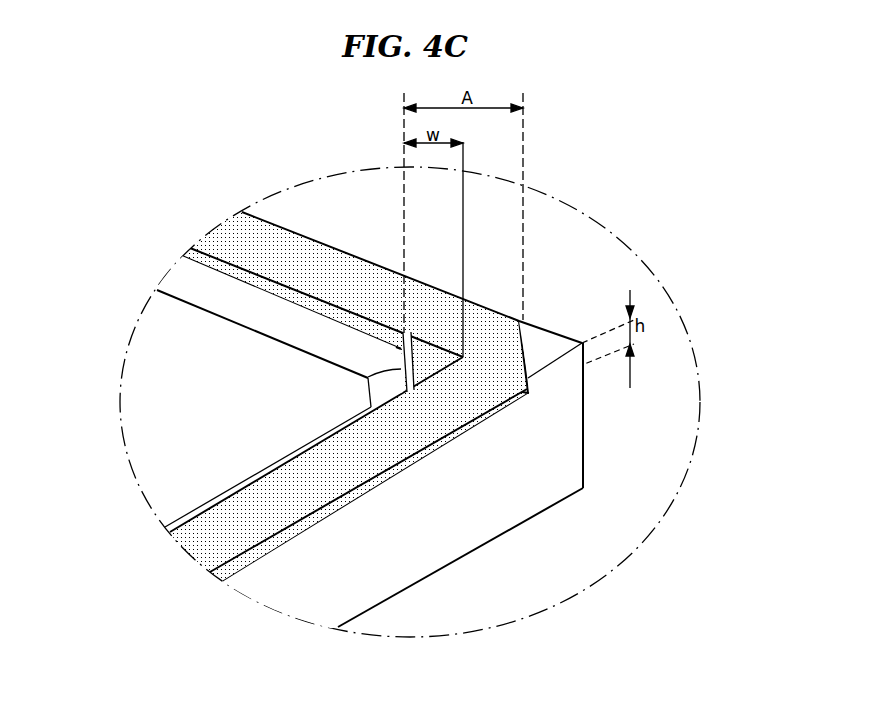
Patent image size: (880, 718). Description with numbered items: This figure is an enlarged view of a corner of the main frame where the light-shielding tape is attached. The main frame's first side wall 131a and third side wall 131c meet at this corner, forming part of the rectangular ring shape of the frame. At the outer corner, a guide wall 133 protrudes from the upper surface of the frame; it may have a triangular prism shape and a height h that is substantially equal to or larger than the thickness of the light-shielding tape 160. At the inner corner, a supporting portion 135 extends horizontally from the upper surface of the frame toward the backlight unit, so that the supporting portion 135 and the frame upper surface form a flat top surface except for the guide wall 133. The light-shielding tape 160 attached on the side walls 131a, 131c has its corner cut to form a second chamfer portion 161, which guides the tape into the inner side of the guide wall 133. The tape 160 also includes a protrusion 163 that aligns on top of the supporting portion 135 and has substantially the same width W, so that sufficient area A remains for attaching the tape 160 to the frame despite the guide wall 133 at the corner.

The light-shielding tape 160 is at (334, 264).
The first side wall 131a is at (238, 302).
The third side wall 131c is at (413, 558).
The guide wall 133 is at (556, 342).
The supporting portion 135 is at (388, 350).
The second chamfer portion 161 is at (548, 396).
The protrusion 163 is at (370, 381).